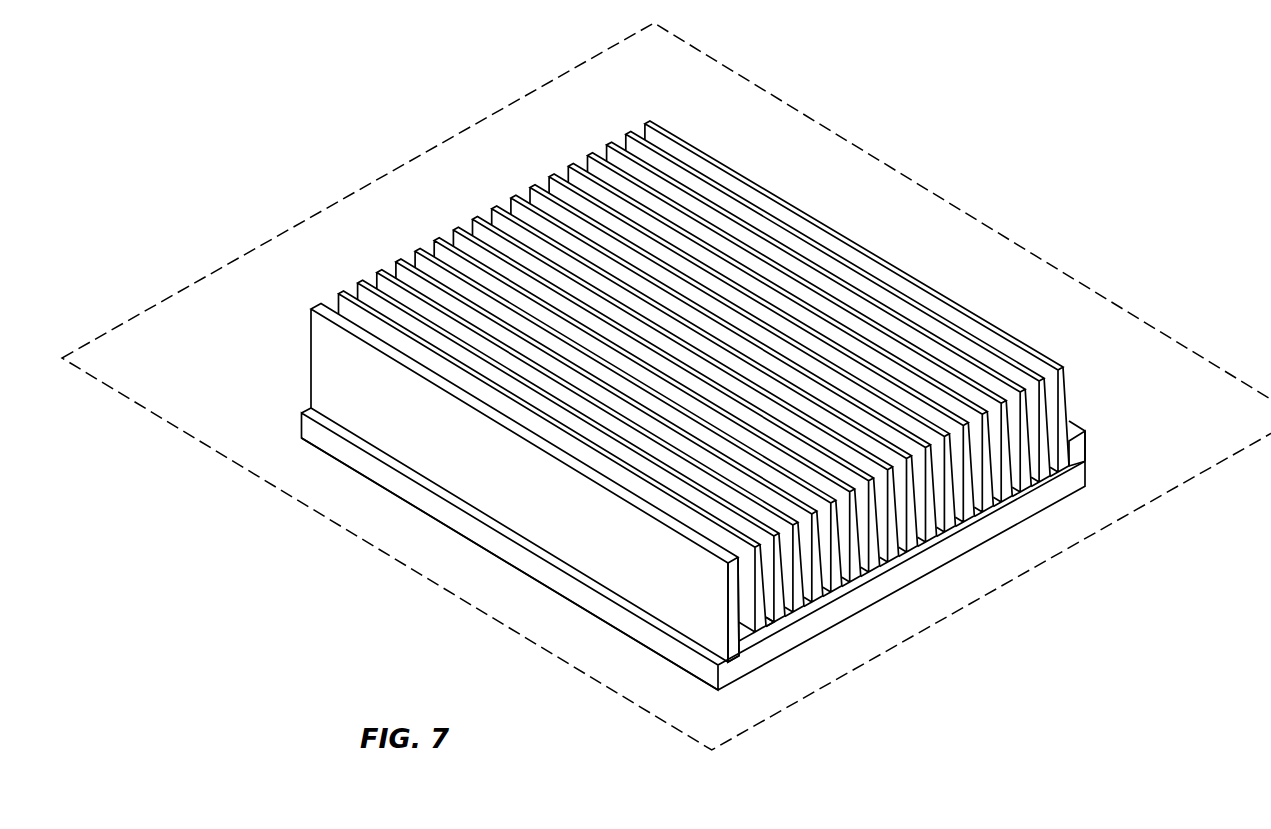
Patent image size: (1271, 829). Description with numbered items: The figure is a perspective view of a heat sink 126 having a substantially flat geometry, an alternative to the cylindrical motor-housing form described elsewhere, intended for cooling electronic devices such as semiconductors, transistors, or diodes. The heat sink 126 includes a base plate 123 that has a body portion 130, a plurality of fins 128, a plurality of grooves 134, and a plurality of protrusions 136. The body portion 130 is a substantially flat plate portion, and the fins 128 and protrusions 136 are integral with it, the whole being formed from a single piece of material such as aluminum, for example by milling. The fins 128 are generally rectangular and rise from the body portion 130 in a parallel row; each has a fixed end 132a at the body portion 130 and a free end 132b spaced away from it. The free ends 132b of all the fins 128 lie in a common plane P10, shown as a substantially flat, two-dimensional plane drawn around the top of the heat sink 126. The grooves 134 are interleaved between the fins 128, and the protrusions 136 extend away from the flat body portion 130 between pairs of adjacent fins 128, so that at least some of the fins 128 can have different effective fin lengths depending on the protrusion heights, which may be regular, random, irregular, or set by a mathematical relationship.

The common plane P10 is at (545, 122).
The heat sink 126 is at (692, 392).
The fins 128 is at (492, 487).
The body portion 130 is at (694, 549).
The base plate 123 is at (478, 540).
The fixed ends 132a is at (722, 649).
The free ends 132b is at (1062, 366).
The grooves 134 is at (871, 269).
The protrusions 136 is at (773, 634).